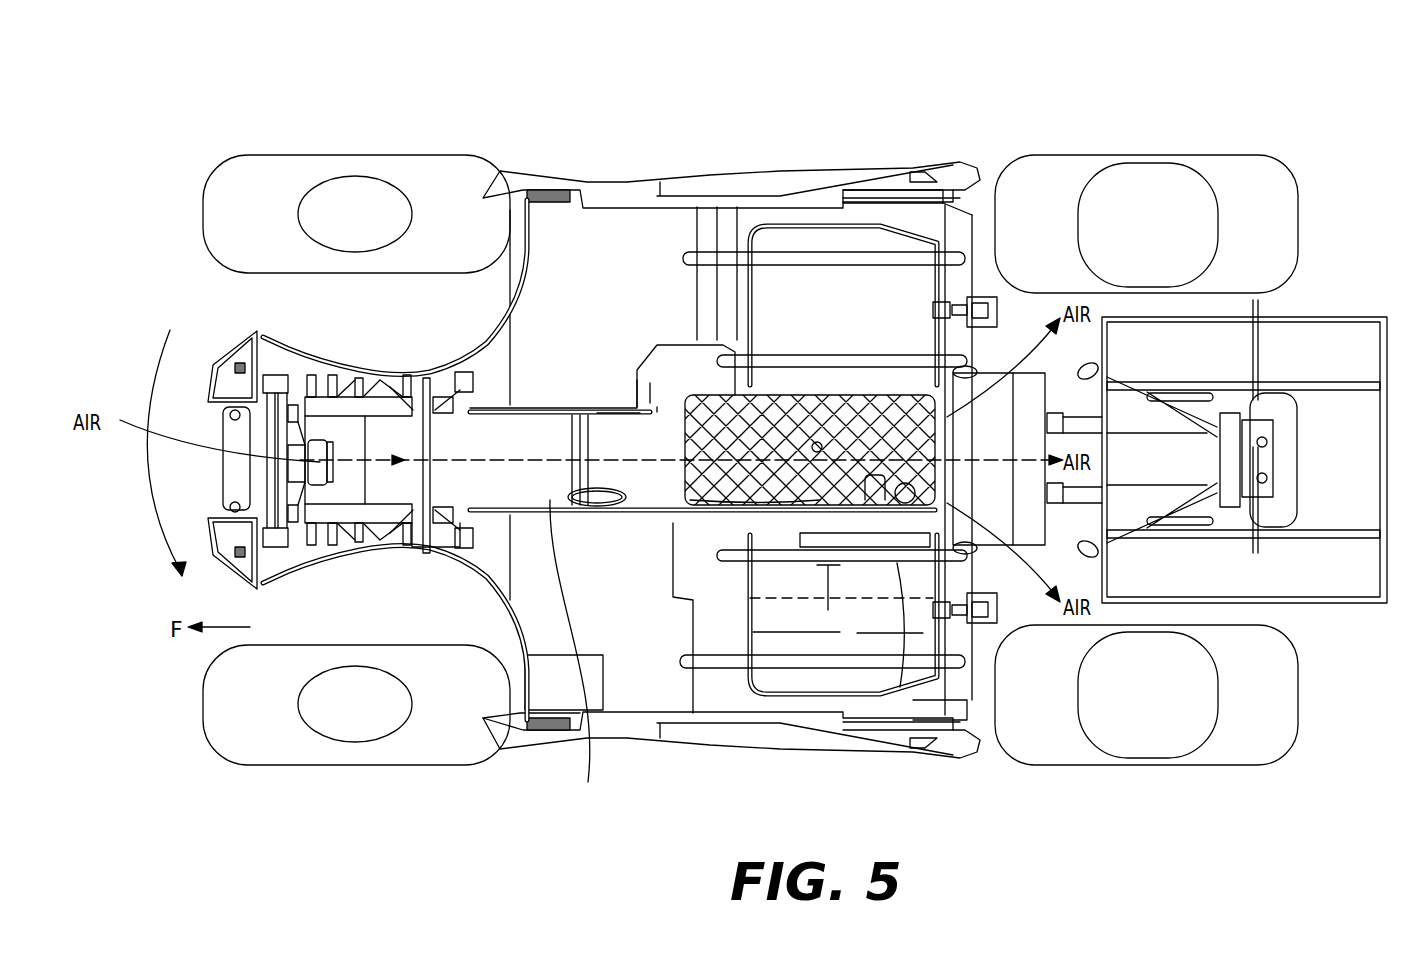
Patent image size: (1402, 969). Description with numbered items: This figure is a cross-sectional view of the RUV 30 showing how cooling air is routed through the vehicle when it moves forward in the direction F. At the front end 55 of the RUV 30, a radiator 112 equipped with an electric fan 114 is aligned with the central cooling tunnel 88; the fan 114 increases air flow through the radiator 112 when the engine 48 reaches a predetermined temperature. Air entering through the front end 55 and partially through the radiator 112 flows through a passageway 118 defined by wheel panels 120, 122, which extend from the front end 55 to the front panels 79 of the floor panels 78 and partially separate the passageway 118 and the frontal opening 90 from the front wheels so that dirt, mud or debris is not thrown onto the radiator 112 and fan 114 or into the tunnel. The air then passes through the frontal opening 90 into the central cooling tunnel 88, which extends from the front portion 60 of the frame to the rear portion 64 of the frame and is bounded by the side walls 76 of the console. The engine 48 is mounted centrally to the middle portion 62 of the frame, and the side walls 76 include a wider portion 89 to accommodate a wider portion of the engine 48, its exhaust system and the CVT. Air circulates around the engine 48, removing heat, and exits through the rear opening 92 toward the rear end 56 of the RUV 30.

The RUV 30 is at (982, 784).
The engine 48 is at (820, 443).
The front end 55 is at (308, 348).
The rear end 56 is at (1328, 364).
The front portion 60 is at (365, 415).
The middle portion 62 is at (963, 553).
The rear portion 64 is at (1130, 490).
The side walls 76 is at (575, 658).
The floor panels 78 is at (575, 350).
The front panels 79 is at (517, 153).
The central cooling tunnel 88 is at (597, 413).
The wider portion 89 is at (680, 407).
The frontal opening 90 is at (468, 366).
The rear opening 92 is at (953, 403).
The radiator 112 is at (263, 408).
The electric fan 114 is at (270, 483).
The passageway 118 is at (283, 450).
The wheel panel 120 is at (410, 393).
The wheel panel 122 is at (417, 550).